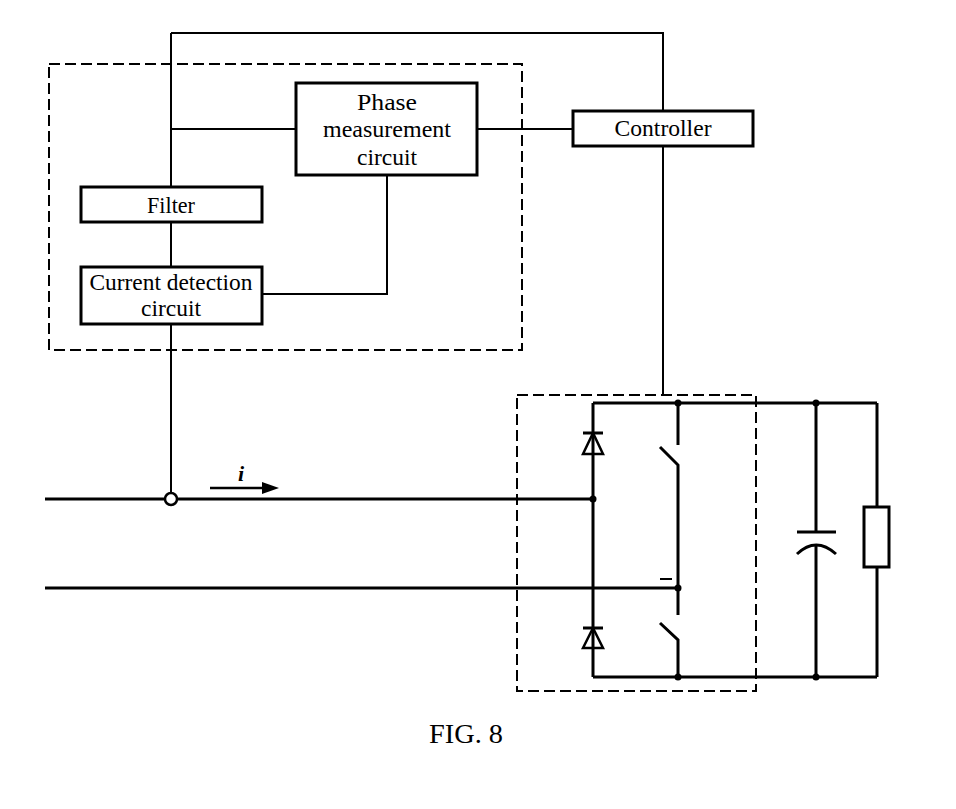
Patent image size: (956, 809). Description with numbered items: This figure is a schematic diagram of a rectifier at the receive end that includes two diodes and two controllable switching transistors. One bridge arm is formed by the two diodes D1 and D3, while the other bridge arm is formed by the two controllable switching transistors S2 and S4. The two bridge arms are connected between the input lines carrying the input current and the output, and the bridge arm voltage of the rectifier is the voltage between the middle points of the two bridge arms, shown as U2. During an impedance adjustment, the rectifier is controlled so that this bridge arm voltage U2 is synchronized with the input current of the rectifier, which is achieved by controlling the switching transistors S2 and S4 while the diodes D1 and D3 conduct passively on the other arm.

The diode D1 is at (573, 441).
The diode D3 is at (565, 643).
The controllable switching transistor S2 is at (686, 495).
The controllable switching transistor S4 is at (686, 632).
The bridge arm voltage U2 is at (735, 540).